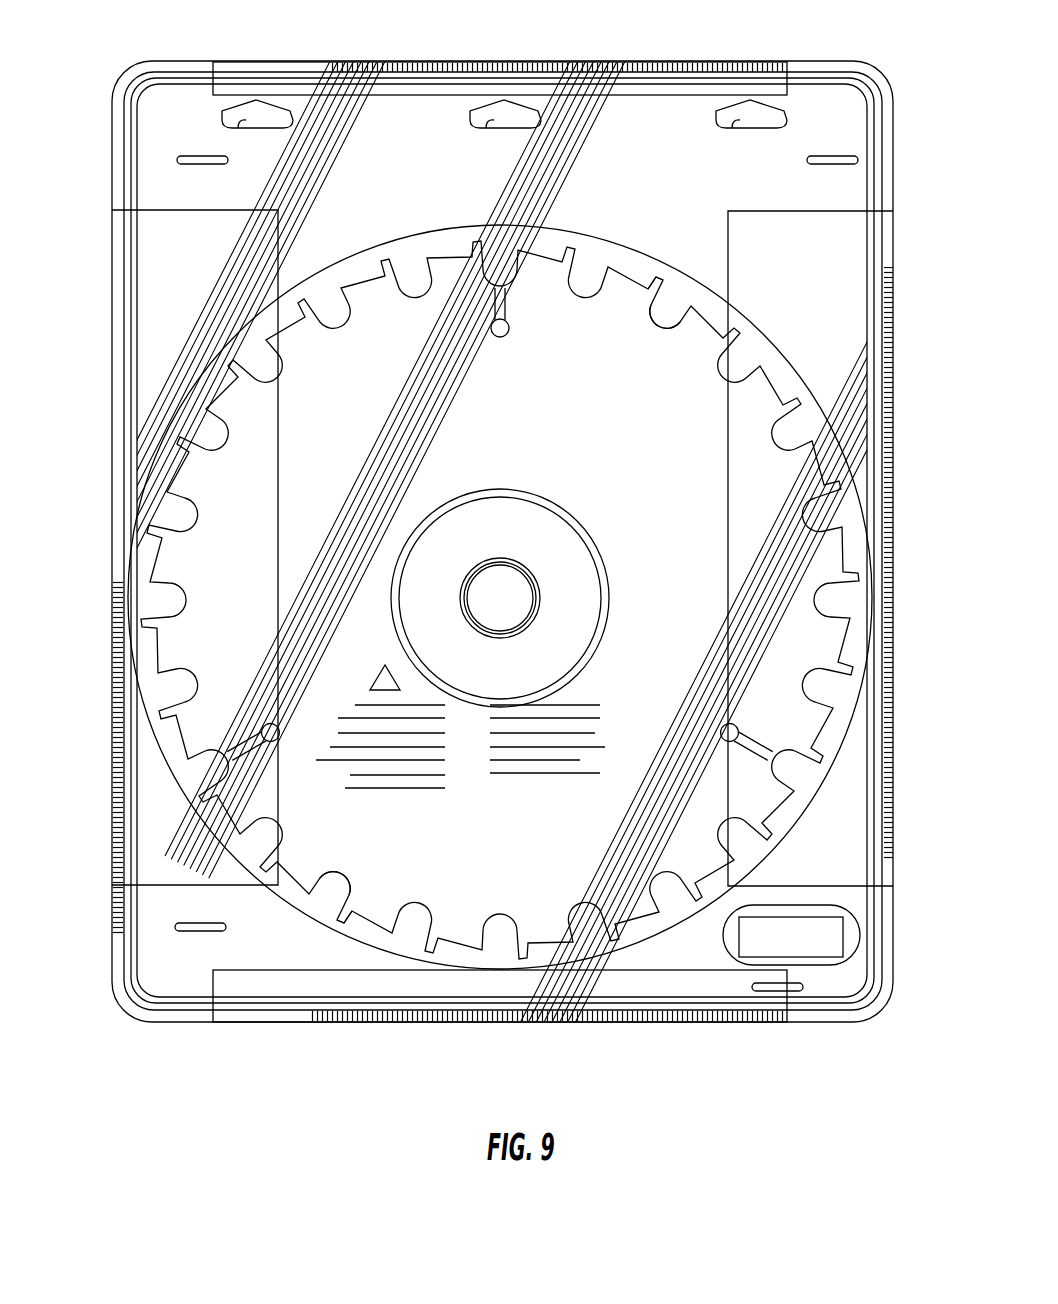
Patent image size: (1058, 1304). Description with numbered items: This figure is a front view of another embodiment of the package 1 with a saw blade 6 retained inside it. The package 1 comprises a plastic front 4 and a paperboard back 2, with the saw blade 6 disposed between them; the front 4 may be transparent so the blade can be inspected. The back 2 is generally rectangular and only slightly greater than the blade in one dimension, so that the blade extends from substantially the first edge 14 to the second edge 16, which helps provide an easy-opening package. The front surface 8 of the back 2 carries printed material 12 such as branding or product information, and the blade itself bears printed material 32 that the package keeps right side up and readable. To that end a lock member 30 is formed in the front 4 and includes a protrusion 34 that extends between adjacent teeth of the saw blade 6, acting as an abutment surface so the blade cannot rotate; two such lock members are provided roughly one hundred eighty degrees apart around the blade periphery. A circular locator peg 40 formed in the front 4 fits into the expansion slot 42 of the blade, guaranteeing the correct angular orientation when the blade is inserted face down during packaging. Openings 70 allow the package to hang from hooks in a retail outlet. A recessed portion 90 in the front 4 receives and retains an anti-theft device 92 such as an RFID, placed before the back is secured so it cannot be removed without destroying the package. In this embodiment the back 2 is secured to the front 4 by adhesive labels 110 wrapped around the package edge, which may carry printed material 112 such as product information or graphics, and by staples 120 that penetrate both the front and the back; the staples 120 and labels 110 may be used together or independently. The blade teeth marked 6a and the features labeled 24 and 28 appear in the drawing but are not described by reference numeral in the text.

The package 1 is at (902, 77).
The paperboard back 2 is at (870, 225).
The plastic front 4 is at (773, 62).
The saw blade 6 is at (732, 334).
The blade teeth 6a is at (695, 308).
The front surface 8 is at (868, 408).
The printed material 12 is at (606, 150).
The first edge 14 is at (872, 535).
The second edge 16 is at (132, 498).
The arbor hole 24 is at (508, 618).
The hub 28 is at (527, 543).
The lock member 30 is at (668, 316).
The printed material 32 is at (305, 532).
The protrusion 34 is at (662, 288).
The locator peg 40 is at (511, 327).
The expansion slot 42 is at (493, 278).
The openings 70 is at (246, 126).
The recessed portion 90 is at (840, 905).
The anti-theft device 92 is at (812, 940).
The labels 110 is at (163, 210).
The printed material 112 is at (160, 268).
The staples 120 is at (200, 155).